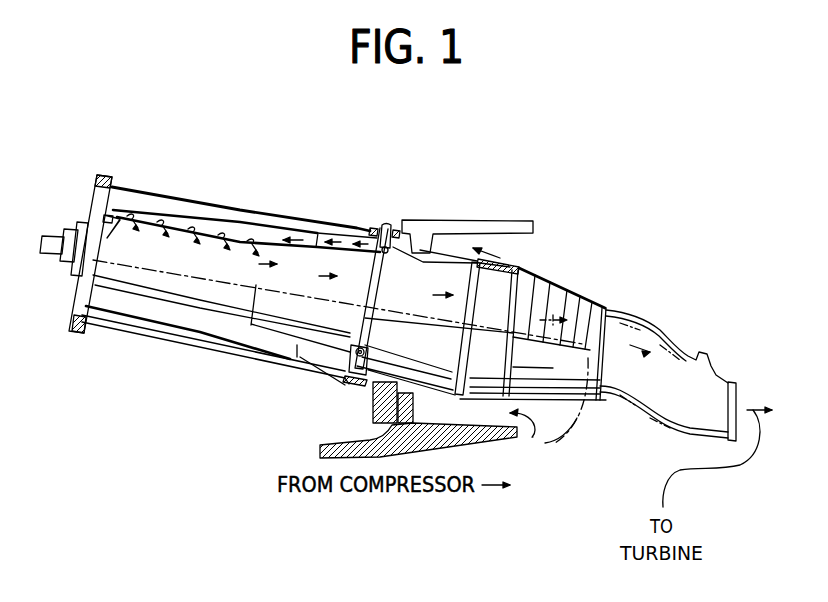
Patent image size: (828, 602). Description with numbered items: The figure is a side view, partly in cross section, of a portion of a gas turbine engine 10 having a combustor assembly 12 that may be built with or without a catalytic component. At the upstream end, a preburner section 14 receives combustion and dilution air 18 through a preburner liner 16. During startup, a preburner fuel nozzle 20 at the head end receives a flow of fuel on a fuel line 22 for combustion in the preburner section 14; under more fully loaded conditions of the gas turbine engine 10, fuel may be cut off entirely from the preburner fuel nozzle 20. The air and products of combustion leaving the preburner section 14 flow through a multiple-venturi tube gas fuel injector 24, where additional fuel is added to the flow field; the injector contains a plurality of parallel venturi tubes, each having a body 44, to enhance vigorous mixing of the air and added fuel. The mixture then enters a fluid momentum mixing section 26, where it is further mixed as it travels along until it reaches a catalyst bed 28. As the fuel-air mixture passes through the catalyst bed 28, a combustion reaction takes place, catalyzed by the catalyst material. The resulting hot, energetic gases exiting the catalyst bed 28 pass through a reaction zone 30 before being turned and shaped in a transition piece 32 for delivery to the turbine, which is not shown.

The gas turbine engine 10 is at (623, 223).
The combustor assembly 12 is at (259, 209).
The preburner section 14 is at (128, 327).
The preburner liner 16 is at (180, 320).
The combustion and dilution air 18 is at (157, 229).
The preburner fuel nozzle 20 is at (66, 262).
The fuel line 22 is at (58, 236).
The multiple-venturi tube gas fuel injector 24 is at (403, 263).
The fluid momentum mixing section 26 is at (452, 278).
The catalyst bed 28 is at (507, 283).
The reaction zone 30 is at (587, 357).
The transition piece 32 is at (678, 370).
The body 44 is at (387, 223).